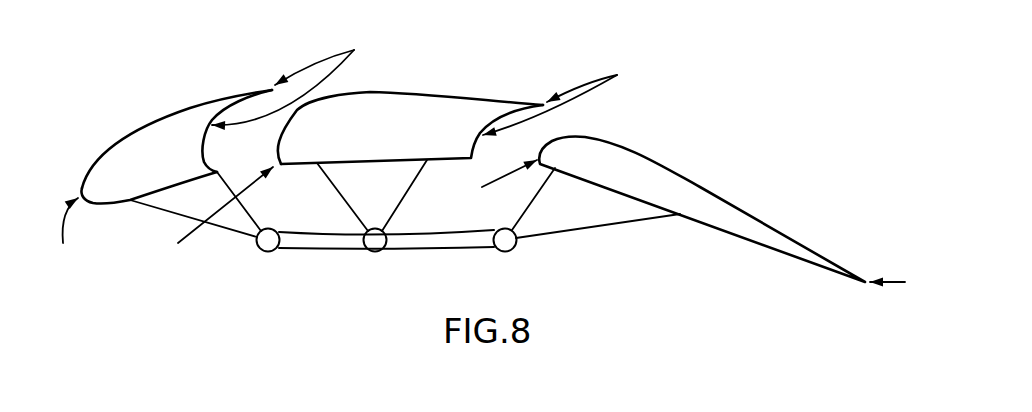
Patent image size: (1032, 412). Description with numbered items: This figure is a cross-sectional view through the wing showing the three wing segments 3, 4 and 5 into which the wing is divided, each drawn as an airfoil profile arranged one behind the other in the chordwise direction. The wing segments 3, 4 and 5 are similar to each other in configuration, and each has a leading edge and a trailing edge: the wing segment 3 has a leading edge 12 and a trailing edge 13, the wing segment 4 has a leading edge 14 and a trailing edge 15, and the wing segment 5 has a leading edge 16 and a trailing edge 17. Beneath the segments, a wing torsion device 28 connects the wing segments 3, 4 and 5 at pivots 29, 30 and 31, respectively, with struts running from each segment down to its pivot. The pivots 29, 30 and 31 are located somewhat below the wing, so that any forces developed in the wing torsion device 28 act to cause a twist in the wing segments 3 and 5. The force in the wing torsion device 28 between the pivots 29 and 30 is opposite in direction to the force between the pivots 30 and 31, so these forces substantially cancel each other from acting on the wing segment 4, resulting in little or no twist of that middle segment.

The wing segment 3 is at (137, 137).
The wing segment 4 is at (427, 108).
The wing segment 5 is at (699, 191).
The leading edge 12 is at (73, 236).
The trailing edge 13 is at (299, 83).
The leading edge 14 is at (211, 215).
The trailing edge 15 is at (567, 97).
The leading edge 16 is at (496, 181).
The trailing edge 17 is at (904, 282).
The wing torsion device 28 is at (445, 243).
The pivot 29 is at (270, 251).
The pivot 30 is at (375, 251).
The pivot 31 is at (507, 251).